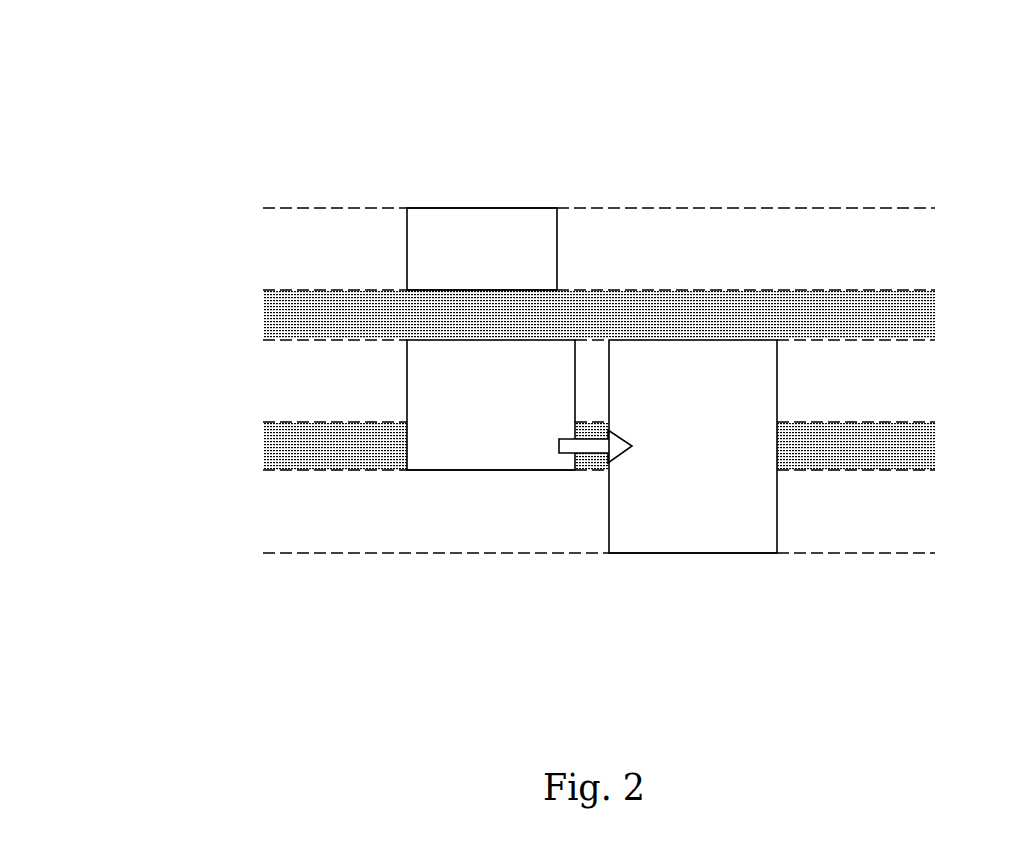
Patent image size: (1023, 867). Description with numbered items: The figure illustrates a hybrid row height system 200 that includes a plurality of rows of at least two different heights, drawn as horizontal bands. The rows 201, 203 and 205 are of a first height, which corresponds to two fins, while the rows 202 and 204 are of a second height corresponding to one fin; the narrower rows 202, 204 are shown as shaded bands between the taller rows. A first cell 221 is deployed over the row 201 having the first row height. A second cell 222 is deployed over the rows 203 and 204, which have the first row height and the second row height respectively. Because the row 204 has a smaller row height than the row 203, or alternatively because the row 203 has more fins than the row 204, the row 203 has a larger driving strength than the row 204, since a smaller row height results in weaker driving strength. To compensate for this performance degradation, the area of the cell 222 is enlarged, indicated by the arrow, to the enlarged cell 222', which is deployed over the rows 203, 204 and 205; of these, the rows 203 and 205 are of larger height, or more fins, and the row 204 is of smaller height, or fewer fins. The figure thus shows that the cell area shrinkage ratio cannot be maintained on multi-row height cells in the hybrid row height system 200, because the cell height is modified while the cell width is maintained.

The hybrid row height system 200 is at (249, 96).
The row 201 is at (917, 252).
The row 202 is at (917, 318).
The row 203 is at (917, 386).
The row 204 is at (917, 451).
The row 205 is at (917, 520).
The first cell 221 is at (540, 208).
The second cell 222 is at (491, 550).
The enlarged cell 222' is at (693, 584).